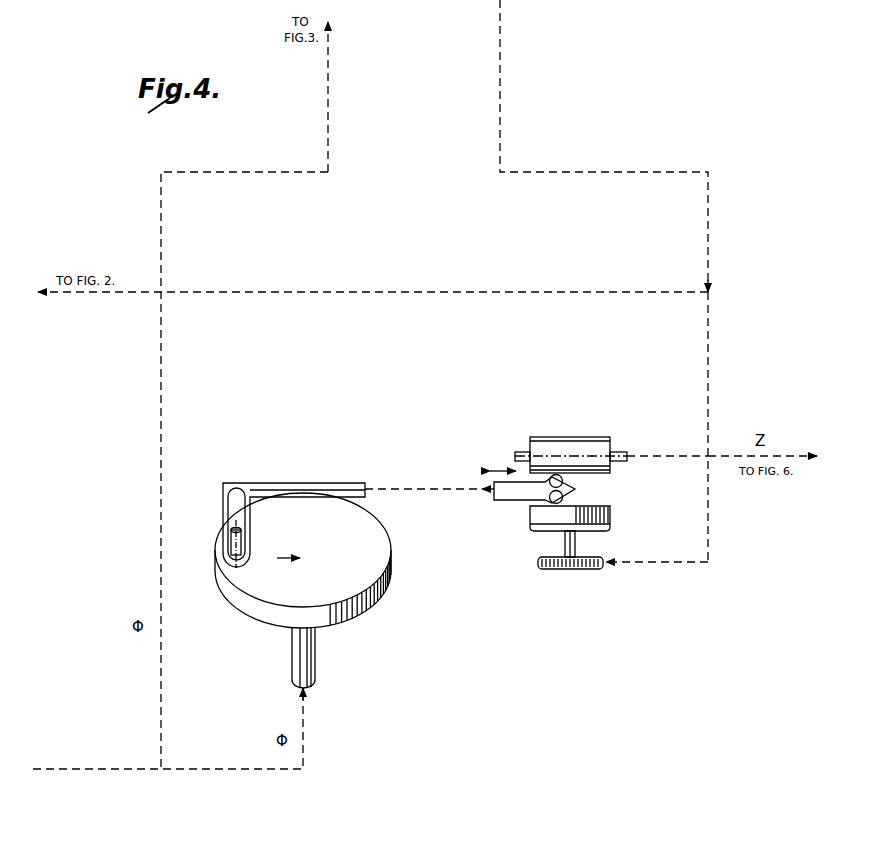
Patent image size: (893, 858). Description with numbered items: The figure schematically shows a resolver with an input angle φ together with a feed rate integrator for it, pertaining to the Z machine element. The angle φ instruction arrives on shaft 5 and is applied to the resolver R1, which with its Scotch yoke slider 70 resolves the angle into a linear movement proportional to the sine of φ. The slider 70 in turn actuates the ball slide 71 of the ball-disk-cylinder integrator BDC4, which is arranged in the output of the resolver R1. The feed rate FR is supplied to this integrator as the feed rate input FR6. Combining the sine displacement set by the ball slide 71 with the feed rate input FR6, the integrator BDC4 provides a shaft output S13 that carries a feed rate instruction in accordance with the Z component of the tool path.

The Scotch yoke slider 70 is at (338, 483).
The ball slide 71 is at (503, 498).
The resolver R1 is at (392, 567).
The ball-disk-cylinder integrator BDC4 is at (543, 437).
The shaft output S13 is at (683, 456).
The feed rate input FR6 is at (683, 563).
The feed rate FR is at (500, 122).
The shaft 5 is at (138, 769).